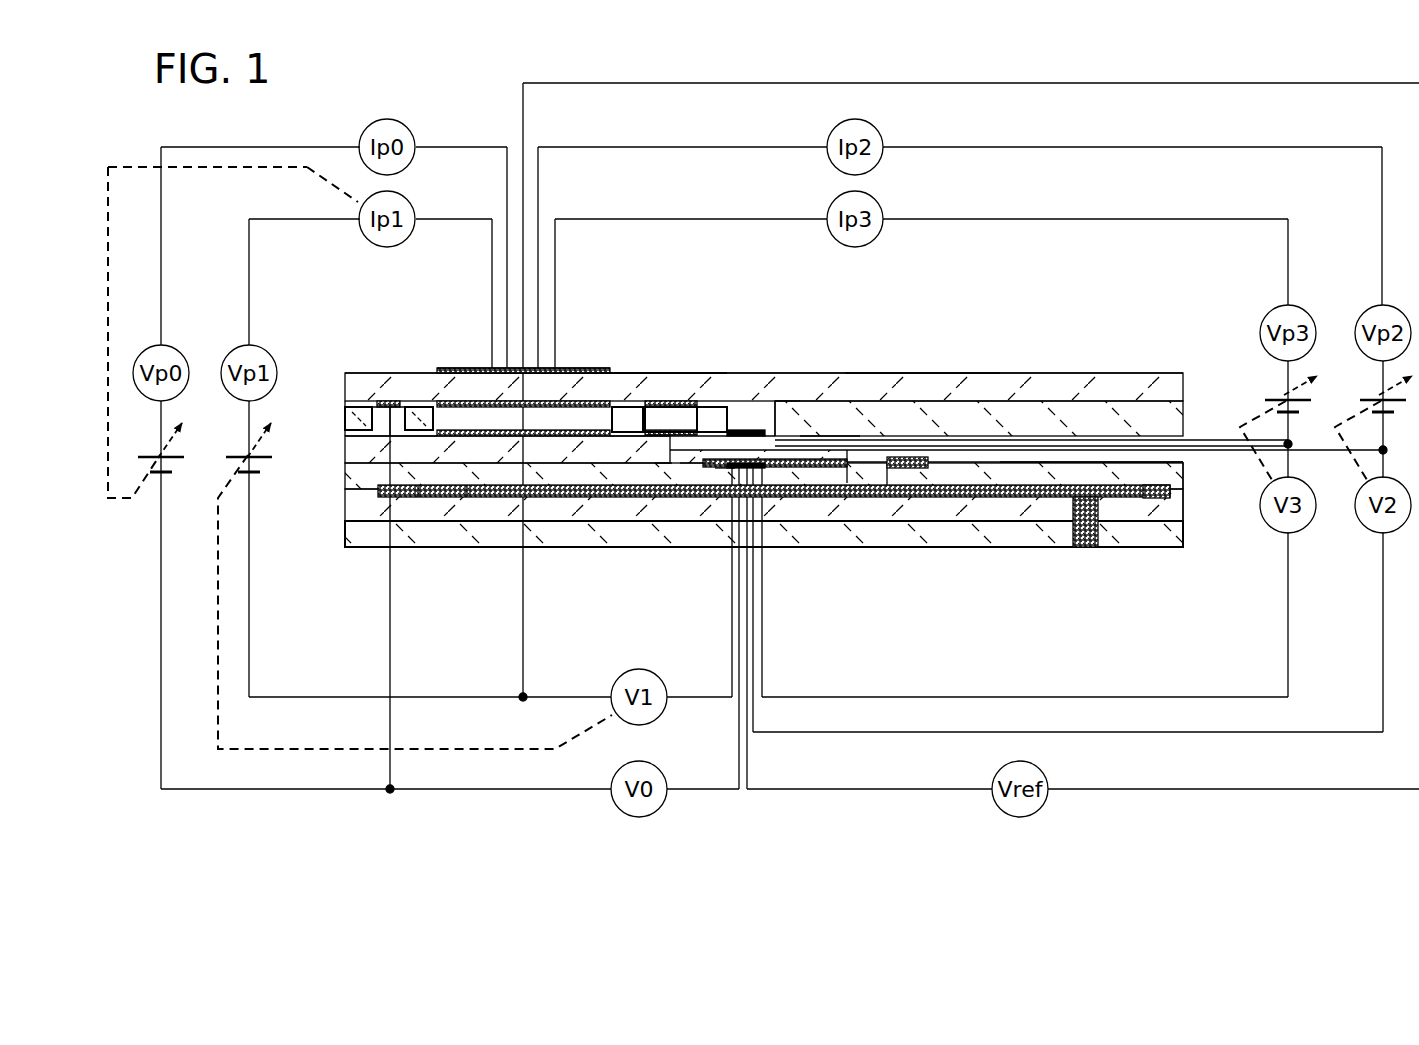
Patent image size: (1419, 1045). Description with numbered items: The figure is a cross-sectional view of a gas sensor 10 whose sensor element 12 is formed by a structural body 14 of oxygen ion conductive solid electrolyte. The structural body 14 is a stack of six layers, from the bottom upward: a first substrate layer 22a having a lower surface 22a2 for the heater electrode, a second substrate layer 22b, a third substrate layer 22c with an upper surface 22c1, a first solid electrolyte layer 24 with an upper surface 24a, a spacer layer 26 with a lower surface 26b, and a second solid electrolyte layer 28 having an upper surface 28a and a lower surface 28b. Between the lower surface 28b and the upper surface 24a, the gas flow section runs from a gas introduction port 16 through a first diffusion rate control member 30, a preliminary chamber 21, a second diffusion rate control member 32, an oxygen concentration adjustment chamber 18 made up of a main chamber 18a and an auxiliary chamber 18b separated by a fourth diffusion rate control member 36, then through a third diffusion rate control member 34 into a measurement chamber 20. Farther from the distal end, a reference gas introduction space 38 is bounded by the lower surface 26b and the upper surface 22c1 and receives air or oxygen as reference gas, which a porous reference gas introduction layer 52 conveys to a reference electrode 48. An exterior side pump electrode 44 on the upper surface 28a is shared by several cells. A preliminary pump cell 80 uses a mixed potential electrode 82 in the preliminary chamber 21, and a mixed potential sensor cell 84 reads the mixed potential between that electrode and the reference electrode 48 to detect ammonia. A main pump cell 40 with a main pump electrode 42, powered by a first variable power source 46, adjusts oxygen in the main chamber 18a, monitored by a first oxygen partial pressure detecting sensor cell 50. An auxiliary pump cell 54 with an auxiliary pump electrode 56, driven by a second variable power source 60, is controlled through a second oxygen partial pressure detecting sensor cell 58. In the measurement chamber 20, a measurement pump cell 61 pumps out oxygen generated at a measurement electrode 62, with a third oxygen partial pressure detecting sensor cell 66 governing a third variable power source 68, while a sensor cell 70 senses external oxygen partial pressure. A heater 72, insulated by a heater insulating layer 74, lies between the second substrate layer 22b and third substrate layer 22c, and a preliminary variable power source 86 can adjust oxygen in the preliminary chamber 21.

The gas sensor 10 is at (200, 127).
The sensor element 12 is at (887, 352).
The structural body 14 is at (972, 373).
The gas introduction port 16 is at (345, 410).
The oxygen concentration adjustment chamber 18 is at (735, 270).
The main chamber 18a is at (588, 372).
The auxiliary chamber 18b is at (697, 372).
The measurement chamber 20 is at (755, 407).
The preliminary chamber 21 is at (393, 418).
The first substrate layer 22a is at (358, 538).
The lower surface of the first substrate layer 22a2 is at (952, 550).
The second substrate layer 22b is at (358, 507).
The third substrate layer 22c is at (358, 480).
The upper surface of the third substrate layer 22c1 is at (1015, 460).
The first solid electrolyte layer 24 is at (360, 447).
The upper surface of the first solid electrolyte layer 24a is at (497, 366).
The spacer layer 26 is at (1170, 412).
The lower surface of the spacer layer 26b is at (1057, 437).
The second solid electrolyte layer 28 is at (1170, 385).
The upper surface of the second solid electrolyte layer 28a is at (888, 373).
The lower surface of the second solid electrolyte layer 28b is at (1157, 405).
The first diffusion rate control member 30 is at (355, 406).
The second diffusion rate control member 32 is at (420, 407).
The third diffusion rate control member 34 is at (718, 407).
The fourth diffusion rate control member 36 is at (625, 408).
The reference gas introduction space 38 is at (1170, 451).
The main pump cell 40 is at (604, 402).
The main pump electrode 42 is at (467, 390).
The exterior side pump electrode 44 is at (567, 369).
The first variable power source 46 is at (247, 457).
The reference electrode 48 is at (830, 407).
The first oxygen partial pressure detecting sensor cell 50 is at (688, 455).
The reference gas introduction layer 52 is at (858, 470).
The auxiliary pump cell 54 is at (653, 392).
The auxiliary pump electrode 56 is at (662, 407).
The second oxygen partial pressure detecting sensor cell 58 is at (705, 453).
The second variable power source 60 is at (1377, 400).
The measurement pump cell 61 is at (782, 398).
The measurement electrode 62 is at (758, 430).
The third oxygen partial pressure detecting sensor cell 66 is at (725, 457).
The third variable power source 68 is at (1282, 400).
The sensor cell 70 is at (773, 472).
The heater 72 is at (467, 498).
The heater insulating layer 74 is at (418, 500).
The preliminary pump cell 80 is at (408, 390).
The mixed potential electrode 82 is at (386, 401).
The mixed potential sensor cell 84 is at (662, 458).
The preliminary variable power source 86 is at (158, 457).